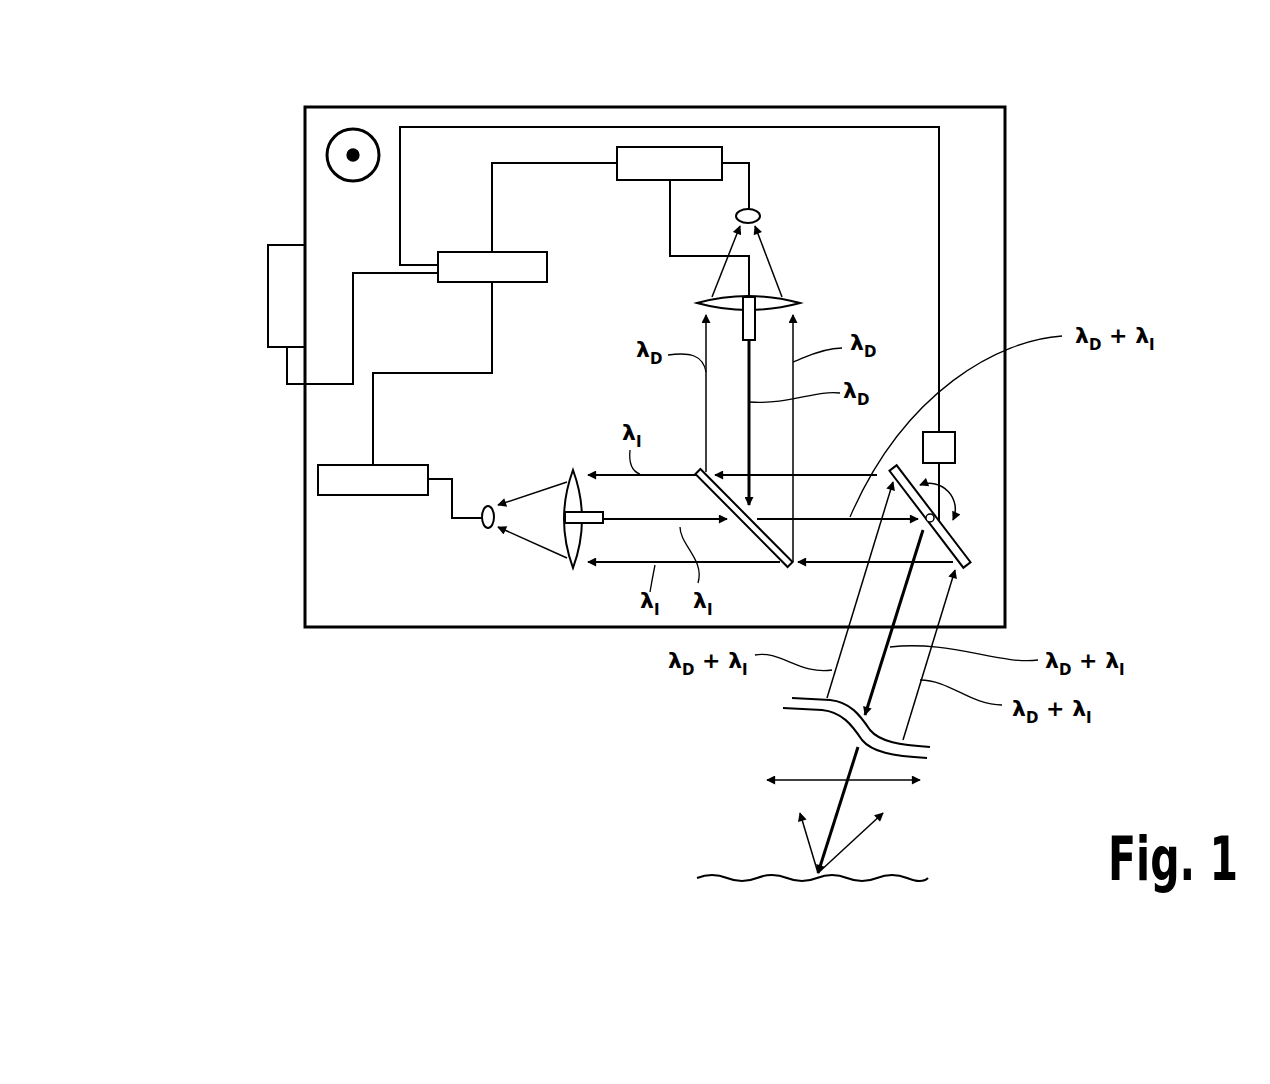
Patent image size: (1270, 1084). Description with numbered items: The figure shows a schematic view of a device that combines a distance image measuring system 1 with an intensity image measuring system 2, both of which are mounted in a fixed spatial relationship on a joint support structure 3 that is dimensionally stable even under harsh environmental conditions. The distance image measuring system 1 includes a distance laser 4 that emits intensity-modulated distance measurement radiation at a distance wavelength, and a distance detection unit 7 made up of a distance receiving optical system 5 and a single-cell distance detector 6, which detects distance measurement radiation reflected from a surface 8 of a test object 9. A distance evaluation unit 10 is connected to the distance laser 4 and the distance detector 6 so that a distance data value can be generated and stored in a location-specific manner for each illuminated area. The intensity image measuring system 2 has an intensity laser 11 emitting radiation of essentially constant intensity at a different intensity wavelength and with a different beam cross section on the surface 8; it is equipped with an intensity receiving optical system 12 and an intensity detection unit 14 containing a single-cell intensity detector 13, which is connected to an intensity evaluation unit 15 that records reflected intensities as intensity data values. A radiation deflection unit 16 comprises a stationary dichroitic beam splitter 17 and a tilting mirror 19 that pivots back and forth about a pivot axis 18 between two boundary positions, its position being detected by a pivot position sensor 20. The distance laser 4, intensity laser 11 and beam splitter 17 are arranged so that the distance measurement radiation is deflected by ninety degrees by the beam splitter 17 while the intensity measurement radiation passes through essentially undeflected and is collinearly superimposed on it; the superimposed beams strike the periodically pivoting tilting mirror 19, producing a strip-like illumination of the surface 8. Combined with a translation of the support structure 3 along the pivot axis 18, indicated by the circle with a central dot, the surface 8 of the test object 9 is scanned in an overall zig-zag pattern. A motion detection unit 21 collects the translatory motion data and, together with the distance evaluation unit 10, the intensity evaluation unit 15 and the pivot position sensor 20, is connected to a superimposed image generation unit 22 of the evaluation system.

The distance image measuring system 1 is at (822, 230).
The intensity image measuring system 2 is at (517, 463).
The support structure 3 is at (1005, 190).
The distance laser 4 is at (750, 323).
The distance receiving optical system 5 is at (770, 299).
The distance detector 6 is at (755, 212).
The distance detection unit 7 is at (720, 243).
The surface 8 is at (878, 883).
The test object 9 is at (755, 882).
The distance evaluation unit 10 is at (642, 163).
The intensity laser 11 is at (600, 523).
The intensity receiving optical system 12 is at (572, 565).
The intensity detector 13 is at (488, 522).
The intensity detection unit 14 is at (490, 493).
The intensity evaluation unit 15 is at (387, 480).
The radiation deflection unit 16 is at (862, 467).
The dichroitic beam splitter 17 is at (790, 565).
The pivot axis 18 is at (955, 536).
The tilting mirror 19 is at (967, 553).
The pivot position sensor 20 is at (938, 442).
The motion detection unit 21 is at (283, 288).
The superimposed image generation unit 22 is at (520, 263).